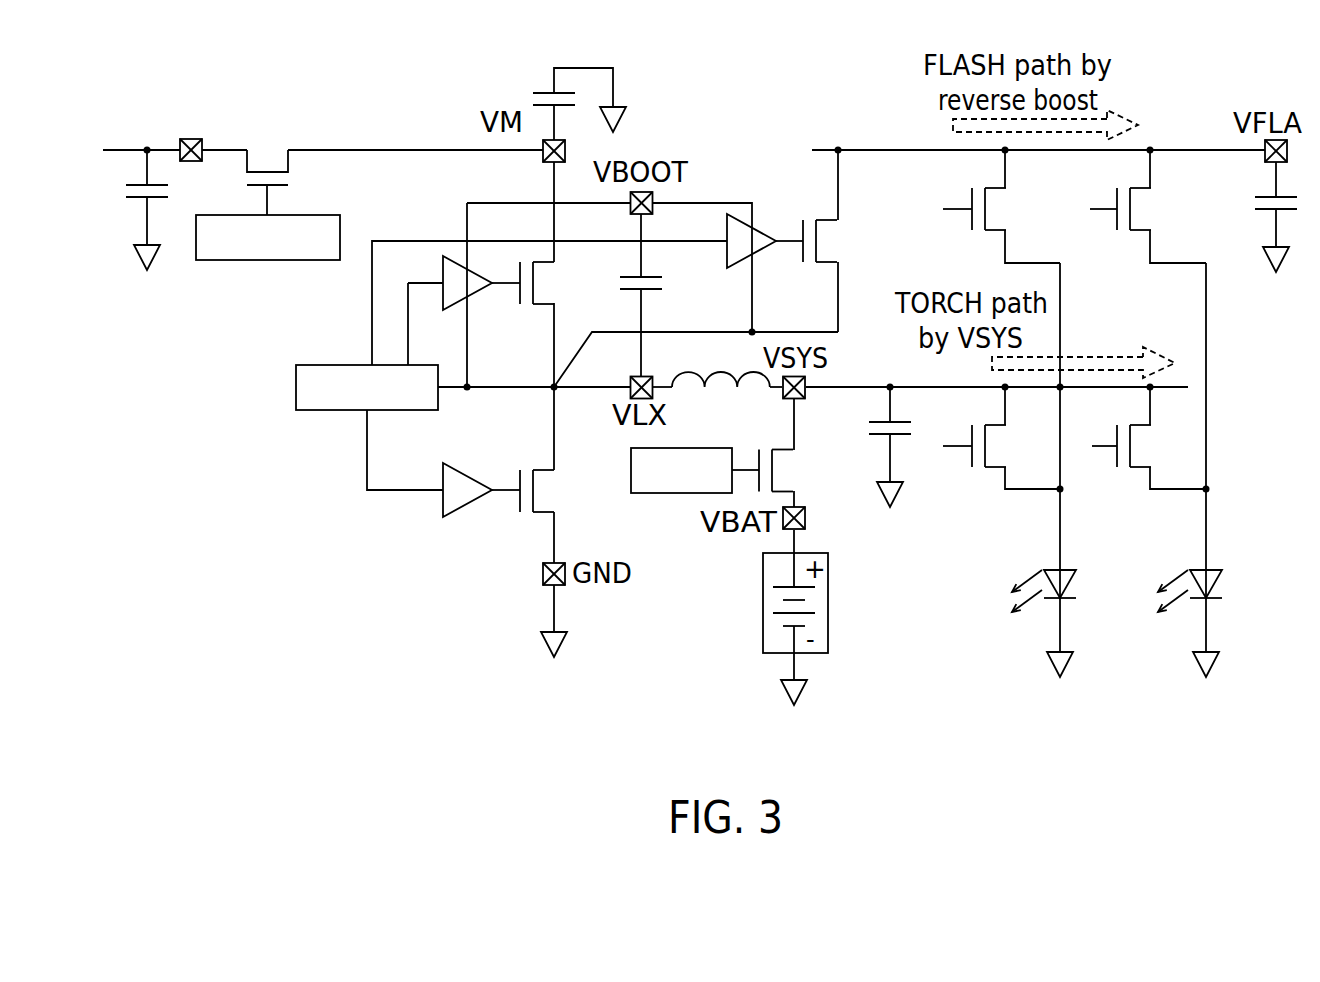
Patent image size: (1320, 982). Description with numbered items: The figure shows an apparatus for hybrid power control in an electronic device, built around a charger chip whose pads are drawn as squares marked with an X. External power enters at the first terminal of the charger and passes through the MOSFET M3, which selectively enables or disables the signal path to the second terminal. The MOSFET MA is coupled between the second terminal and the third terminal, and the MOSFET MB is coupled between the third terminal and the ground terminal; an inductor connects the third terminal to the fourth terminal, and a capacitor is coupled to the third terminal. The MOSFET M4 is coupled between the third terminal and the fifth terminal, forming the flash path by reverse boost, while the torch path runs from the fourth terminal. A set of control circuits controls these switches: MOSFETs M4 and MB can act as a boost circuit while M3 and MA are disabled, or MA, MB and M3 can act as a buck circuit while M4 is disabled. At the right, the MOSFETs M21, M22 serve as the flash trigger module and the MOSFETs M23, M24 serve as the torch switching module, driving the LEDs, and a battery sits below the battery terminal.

The MOSFET M3 is at (267, 166).
The MOSFET MA is at (556, 283).
The MOSFET MB is at (556, 491).
The MOSFET M4 is at (838, 241).
The MOSFET M21 is at (1001, 206).
The MOSFET M22 is at (1148, 206).
The MOSFET M23 is at (1001, 438).
The MOSFET M24 is at (1149, 438).